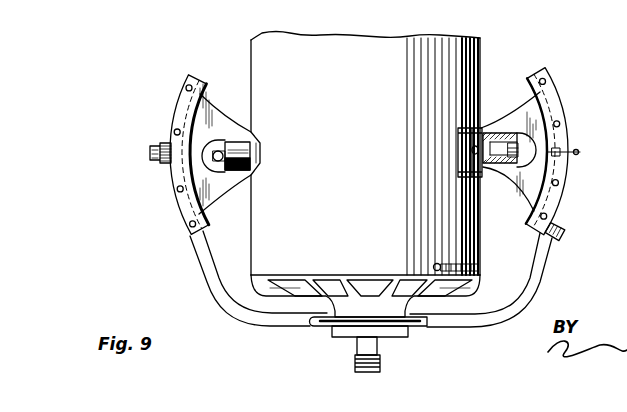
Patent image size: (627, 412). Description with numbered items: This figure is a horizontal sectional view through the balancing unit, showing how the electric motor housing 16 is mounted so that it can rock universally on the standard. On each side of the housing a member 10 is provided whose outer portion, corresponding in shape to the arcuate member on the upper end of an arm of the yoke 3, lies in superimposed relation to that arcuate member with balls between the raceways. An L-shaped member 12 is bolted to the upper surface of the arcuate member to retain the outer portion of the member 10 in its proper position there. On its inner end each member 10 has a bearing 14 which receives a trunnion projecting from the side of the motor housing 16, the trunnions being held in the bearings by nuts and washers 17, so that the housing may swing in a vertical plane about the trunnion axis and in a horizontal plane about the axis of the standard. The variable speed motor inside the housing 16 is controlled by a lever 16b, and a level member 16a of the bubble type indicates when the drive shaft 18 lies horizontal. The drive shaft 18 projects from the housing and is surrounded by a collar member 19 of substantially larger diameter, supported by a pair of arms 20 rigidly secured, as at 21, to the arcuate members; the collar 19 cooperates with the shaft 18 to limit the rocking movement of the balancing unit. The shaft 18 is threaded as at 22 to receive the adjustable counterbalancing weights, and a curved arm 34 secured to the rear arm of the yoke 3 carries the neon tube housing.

The electric motor housing 16 is at (330, 52).
The L-shaped member 12 is at (176, 107).
The member 10 is at (212, 182).
The yoke 3 is at (242, 182).
The bearing 14 is at (232, 140).
The nuts and washers 17 is at (226, 157).
The curved arm 34 is at (151, 152).
The level member 16a is at (476, 130).
The lever 16b is at (434, 266).
The arms 20 is at (539, 272).
The securing point 21 is at (566, 231).
The collar member 19 is at (376, 323).
The drive shaft 18 is at (362, 345).
The threaded portion 22 is at (363, 368).